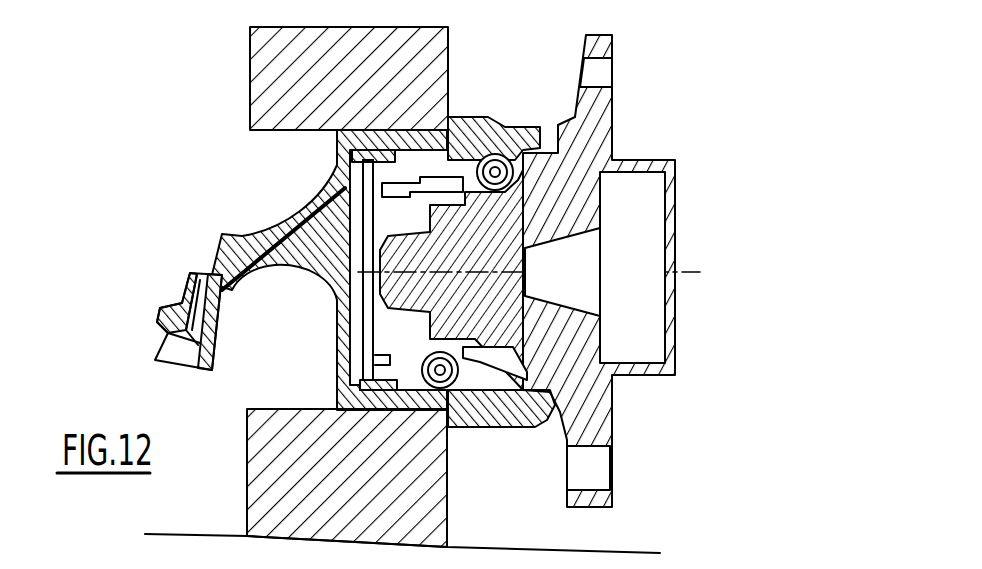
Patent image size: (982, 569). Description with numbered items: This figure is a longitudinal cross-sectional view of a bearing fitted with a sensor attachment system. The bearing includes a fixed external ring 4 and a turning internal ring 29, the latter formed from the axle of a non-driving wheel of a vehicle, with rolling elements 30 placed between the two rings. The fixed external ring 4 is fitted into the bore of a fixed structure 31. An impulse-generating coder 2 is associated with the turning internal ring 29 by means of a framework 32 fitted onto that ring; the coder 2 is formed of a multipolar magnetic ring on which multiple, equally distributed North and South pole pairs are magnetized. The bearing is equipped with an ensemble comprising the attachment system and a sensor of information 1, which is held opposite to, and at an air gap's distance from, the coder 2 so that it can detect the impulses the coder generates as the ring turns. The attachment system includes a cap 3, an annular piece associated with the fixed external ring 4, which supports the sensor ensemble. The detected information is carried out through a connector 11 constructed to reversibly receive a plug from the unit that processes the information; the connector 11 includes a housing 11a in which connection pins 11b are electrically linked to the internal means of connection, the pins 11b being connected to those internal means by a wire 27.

The sensor of information 1 is at (327, 293).
The coder 2 is at (337, 372).
The cap 3 is at (340, 152).
The ring 4 is at (470, 122).
The connector 11 is at (170, 322).
The housing 11a is at (177, 353).
The connection pins 11b is at (198, 345).
The wire 27 is at (232, 234).
The turning internal ring 29 is at (605, 117).
The rolling elements 30 is at (500, 155).
The fixed structure 31 is at (430, 60).
The framework 32 is at (365, 392).